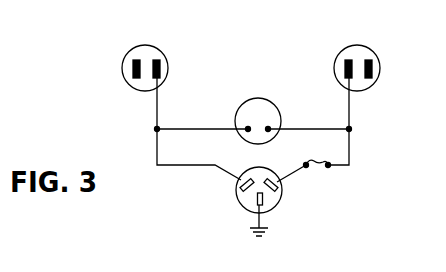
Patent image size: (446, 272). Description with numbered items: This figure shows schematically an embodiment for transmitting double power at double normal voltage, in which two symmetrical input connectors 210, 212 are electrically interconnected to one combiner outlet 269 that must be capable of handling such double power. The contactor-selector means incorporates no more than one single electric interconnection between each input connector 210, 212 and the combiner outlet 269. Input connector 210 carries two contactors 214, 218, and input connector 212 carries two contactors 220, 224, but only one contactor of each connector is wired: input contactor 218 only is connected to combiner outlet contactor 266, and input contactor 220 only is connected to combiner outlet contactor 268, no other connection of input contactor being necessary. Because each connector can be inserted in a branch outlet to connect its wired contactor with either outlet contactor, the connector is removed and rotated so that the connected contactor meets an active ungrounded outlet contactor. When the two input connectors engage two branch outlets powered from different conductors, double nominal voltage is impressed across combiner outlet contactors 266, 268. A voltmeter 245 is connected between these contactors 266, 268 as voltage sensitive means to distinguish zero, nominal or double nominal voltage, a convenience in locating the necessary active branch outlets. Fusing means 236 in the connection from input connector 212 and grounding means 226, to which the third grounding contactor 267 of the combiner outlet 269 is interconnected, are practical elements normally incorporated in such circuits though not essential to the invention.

The input connector 210 is at (145, 43).
The input connector 212 is at (357, 43).
The contactor 214 is at (127, 62).
The input contactor 218 is at (161, 62).
The input contactor 220 is at (345, 64).
The contactor 224 is at (373, 61).
The voltmeter 245 is at (258, 98).
The fusing means 236 is at (335, 178).
The combiner outlet 269 is at (285, 203).
The combiner outlet contactor 266 is at (240, 186).
The grounding contactor 267 is at (250, 203).
The combiner outlet contactor 268 is at (279, 186).
The grounding means 226 is at (269, 229).